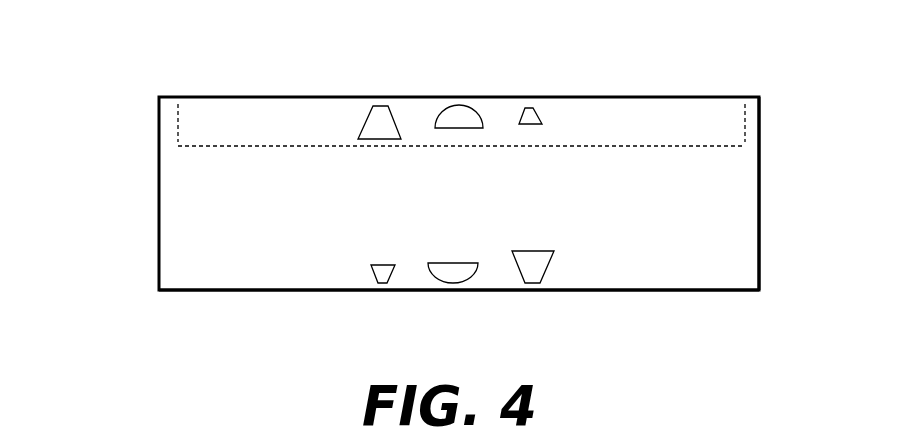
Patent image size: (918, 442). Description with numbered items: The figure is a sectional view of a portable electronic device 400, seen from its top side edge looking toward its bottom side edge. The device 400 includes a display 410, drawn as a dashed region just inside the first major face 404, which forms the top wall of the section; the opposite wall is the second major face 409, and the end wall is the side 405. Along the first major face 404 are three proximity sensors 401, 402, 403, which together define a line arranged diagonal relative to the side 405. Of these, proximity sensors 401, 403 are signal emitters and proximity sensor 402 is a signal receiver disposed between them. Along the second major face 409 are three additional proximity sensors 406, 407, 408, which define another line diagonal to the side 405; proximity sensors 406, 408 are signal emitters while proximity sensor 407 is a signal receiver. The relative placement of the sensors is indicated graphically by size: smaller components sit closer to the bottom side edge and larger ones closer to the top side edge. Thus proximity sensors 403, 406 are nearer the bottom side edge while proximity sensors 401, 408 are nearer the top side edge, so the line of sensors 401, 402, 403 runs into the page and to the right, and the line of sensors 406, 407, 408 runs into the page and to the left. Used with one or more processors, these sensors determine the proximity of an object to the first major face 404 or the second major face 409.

The electronic device 400 is at (108, 208).
The proximity sensor 401 is at (372, 106).
The proximity sensor 402 is at (443, 107).
The proximity sensor 403 is at (525, 107).
The first major face 404 is at (703, 97).
The side 405 is at (767, 218).
The proximity sensor 406 is at (387, 282).
The proximity sensor 407 is at (453, 283).
The proximity sensor 408 is at (527, 285).
The second major face 409 is at (693, 290).
The display 410 is at (617, 147).